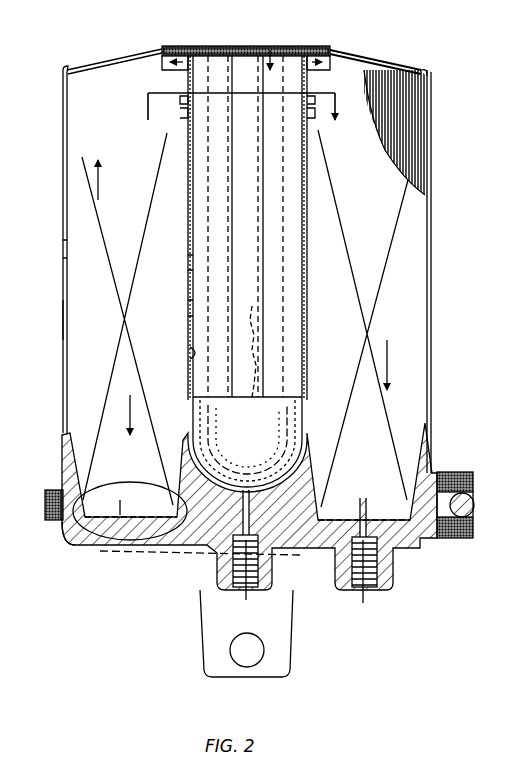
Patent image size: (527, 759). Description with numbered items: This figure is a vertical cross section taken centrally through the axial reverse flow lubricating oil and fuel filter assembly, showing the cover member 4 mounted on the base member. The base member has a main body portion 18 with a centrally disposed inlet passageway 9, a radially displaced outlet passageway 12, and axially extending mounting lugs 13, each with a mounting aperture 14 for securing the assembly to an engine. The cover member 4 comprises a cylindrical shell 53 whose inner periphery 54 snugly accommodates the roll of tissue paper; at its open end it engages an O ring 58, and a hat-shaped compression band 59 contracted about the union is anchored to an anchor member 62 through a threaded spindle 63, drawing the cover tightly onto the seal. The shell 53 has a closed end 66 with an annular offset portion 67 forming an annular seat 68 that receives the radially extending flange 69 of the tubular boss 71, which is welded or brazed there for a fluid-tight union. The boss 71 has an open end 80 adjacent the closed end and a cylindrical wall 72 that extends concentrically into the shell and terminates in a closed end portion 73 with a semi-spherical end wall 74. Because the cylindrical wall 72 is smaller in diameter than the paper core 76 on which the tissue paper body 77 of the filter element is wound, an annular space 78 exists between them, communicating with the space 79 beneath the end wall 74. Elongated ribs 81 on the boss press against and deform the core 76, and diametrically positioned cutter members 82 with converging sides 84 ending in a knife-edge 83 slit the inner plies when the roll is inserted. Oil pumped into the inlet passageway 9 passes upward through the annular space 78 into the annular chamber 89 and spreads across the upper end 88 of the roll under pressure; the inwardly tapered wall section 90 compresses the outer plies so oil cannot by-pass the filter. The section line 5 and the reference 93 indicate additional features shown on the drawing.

The cover member 4 is at (58, 232).
The section line 5- 5 is at (238, 102).
The inlet passageway 9 is at (240, 590).
The outlet passageway 12 is at (362, 592).
The mounting lugs 13 is at (285, 660).
The mounting aperture 14 is at (250, 642).
The main body portion 18 is at (298, 553).
The cylindrical shell 53 is at (62, 318).
The inner periphery 54 is at (66, 248).
The "O" ring 58 is at (64, 528).
The compression band 59 is at (45, 505).
The anchor member 62 is at (466, 470).
The threaded spindle 63 is at (460, 540).
The closed end 66 is at (116, 54).
The annular offset portion 67 is at (178, 60).
The annular seat 68 is at (308, 70).
The radially extending flange 69 is at (172, 68).
The tubular boss 71 is at (270, 48).
The cylindrical wall 72 is at (198, 60).
The closed end portion 73 is at (262, 412).
The semi-spherical end wall 74 is at (320, 432).
The paper core 76 is at (186, 308).
The tissue paper body 77 is at (108, 325).
The annular space 78 is at (190, 262).
The space 79 is at (195, 440).
The open end 80 is at (238, 50).
The ribs 81 is at (247, 351).
The cutter members 82 is at (176, 100).
The knife-edge 83 is at (313, 112).
The converging sides 84 is at (178, 112).
The upper end 88 is at (352, 70).
The annular chamber 89 is at (340, 62).
The tapered wall section 90 is at (66, 90).
The tube wall opening 93 is at (188, 353).